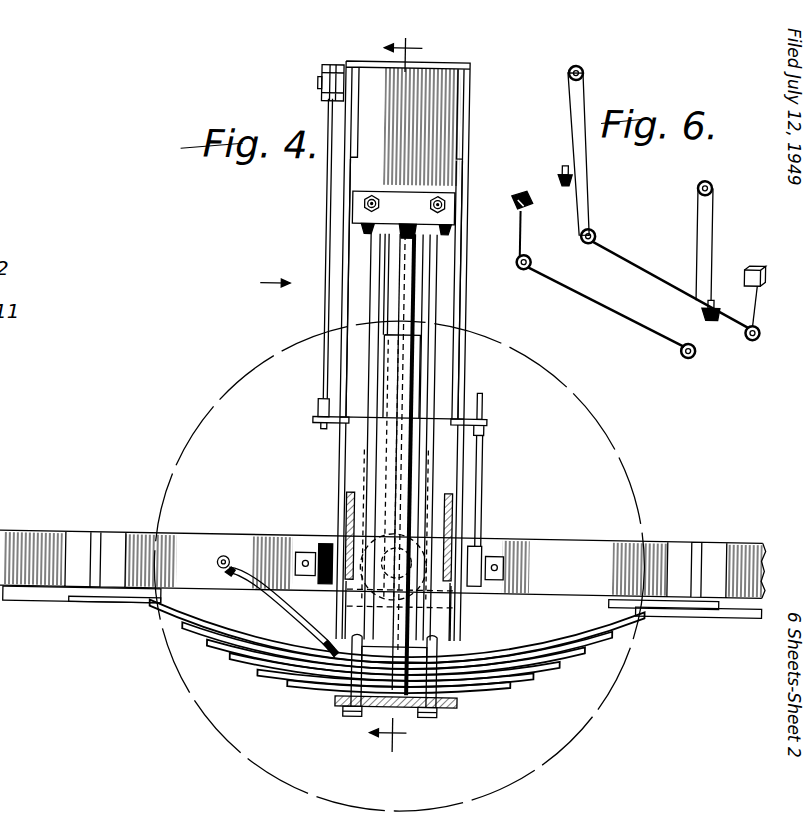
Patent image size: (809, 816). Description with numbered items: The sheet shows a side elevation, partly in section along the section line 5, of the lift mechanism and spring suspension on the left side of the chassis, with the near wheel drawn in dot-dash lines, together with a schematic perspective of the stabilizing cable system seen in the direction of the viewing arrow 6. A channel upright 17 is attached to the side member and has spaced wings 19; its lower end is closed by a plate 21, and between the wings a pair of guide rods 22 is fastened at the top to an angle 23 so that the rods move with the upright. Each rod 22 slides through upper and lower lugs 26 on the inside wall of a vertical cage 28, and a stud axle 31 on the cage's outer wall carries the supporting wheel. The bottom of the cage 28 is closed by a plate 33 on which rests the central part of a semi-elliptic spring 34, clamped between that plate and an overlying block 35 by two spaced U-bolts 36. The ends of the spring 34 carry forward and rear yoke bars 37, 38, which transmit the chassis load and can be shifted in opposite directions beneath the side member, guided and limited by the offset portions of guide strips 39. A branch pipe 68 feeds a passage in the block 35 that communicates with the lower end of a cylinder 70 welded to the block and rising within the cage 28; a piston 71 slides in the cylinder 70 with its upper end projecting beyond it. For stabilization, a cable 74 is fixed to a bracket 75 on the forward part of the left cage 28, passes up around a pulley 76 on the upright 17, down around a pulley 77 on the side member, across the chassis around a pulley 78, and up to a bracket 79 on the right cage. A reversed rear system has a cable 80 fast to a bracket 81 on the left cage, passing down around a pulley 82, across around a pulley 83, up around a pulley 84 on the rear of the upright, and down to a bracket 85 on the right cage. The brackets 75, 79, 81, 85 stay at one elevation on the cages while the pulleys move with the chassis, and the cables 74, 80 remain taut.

In FIG. 4, the section line 5 is at (404, 388).
In FIG. 4, the viewing arrow 6 is at (263, 282).
In FIG. 4, the channel upright 17 is at (472, 90).
In FIG. 4, the wings 19 is at (346, 180).
In FIG. 4, the plate 21 is at (458, 618).
In FIG. 4, the guide rods 22 is at (369, 253).
In FIG. 4, the angle 23 is at (384, 192).
In FIG. 4, the lugs 26 is at (445, 426).
In FIG. 4, the vertical cage 28 is at (342, 450).
In FIG. 4, the stud axle 31 is at (230, 398).
In FIG. 4, the plate 33 is at (342, 708).
In FIG. 4, the semi-elliptic spring 34 is at (238, 645).
In FIG. 4, the block 35 is at (394, 654).
In FIG. 4, the U-bolts 36 is at (346, 707).
In FIG. 4, the forward yoke bar 37 is at (66, 544).
In FIG. 4, the rear yoke bar 38 is at (664, 542).
In FIG. 4, the guide strips 39 is at (60, 608).
In FIG. 4, the branch pipe 68 is at (320, 634).
In FIG. 4, the cylinder 70 is at (385, 366).
In FIG. 4, the piston 71 is at (408, 301).
In FIG. 4, the cable 74 is at (325, 311).
In FIG. 6, the cable 74 is at (712, 225).
In FIG. 4, the bracket 75 is at (315, 421).
In FIG. 6, the bracket 75 is at (712, 314).
In FIG. 4, the pulley 76 is at (326, 66).
In FIG. 6, the pulley 76 is at (705, 176).
In FIG. 4, the pulley 77 is at (312, 552).
In FIG. 6, the pulley 77 is at (685, 353).
In FIG. 6, the pulley 78 is at (531, 260).
In FIG. 6, the bracket 79 is at (518, 192).
In FIG. 4, the cable 80 is at (487, 482).
In FIG. 6, the cable 80 is at (756, 300).
In FIG. 4, the bracket 81 is at (490, 421).
In FIG. 6, the bracket 81 is at (752, 264).
In FIG. 4, the pulley 82 is at (499, 554).
In FIG. 6, the pulley 82 is at (751, 335).
In FIG. 6, the pulley 83 is at (595, 230).
In FIG. 6, the pulley 84 is at (578, 65).
In FIG. 6, the bracket 85 is at (554, 168).